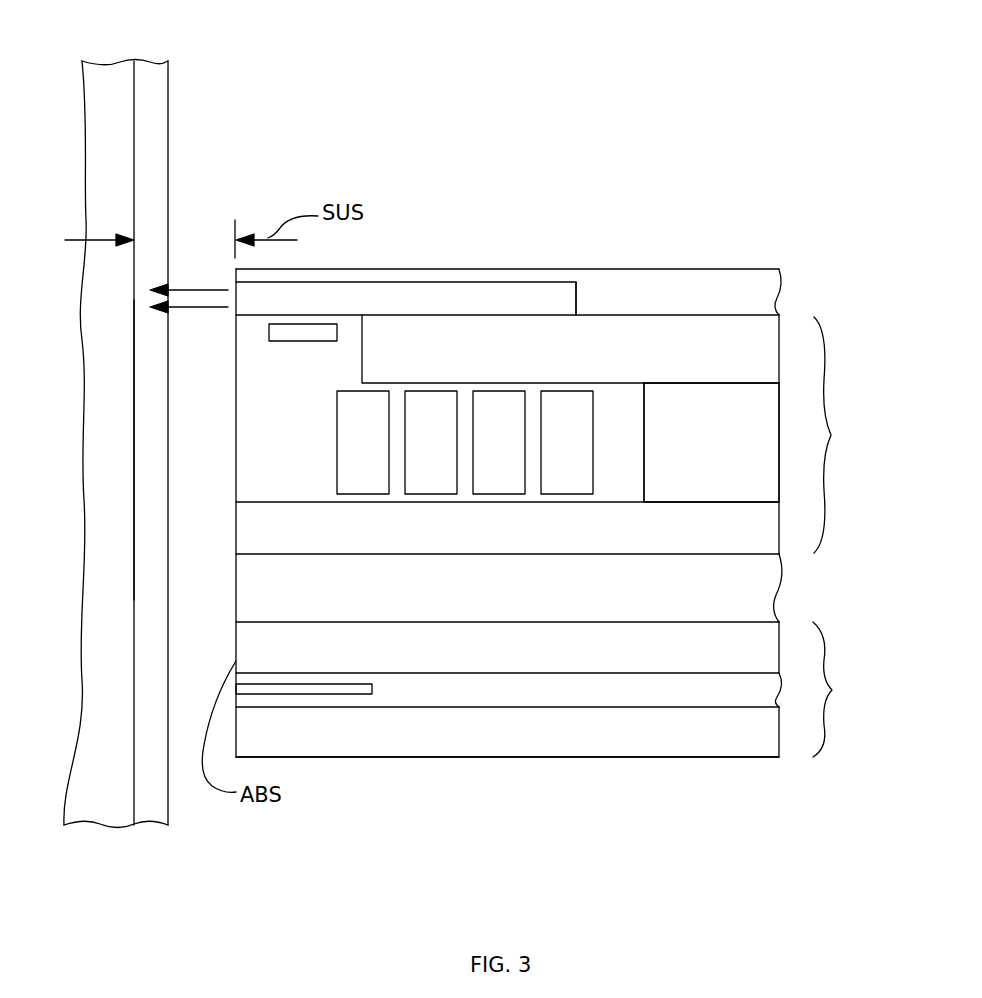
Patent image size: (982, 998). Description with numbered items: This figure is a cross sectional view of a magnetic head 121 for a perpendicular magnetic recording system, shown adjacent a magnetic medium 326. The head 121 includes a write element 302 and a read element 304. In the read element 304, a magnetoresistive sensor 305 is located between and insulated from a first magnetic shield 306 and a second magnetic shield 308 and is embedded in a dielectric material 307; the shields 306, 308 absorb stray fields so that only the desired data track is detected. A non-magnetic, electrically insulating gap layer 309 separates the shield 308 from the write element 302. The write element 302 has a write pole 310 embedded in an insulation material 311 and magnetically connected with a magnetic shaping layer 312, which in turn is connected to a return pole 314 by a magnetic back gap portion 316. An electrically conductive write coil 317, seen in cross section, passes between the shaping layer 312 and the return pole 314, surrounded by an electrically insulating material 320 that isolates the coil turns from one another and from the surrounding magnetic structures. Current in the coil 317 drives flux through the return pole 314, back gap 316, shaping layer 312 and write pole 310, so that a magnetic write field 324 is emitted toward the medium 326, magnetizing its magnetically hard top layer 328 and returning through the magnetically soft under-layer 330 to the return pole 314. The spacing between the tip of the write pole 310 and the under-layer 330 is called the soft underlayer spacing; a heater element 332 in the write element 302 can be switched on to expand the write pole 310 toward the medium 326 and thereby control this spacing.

The magnetic head 121 is at (543, 261).
The write element 302 is at (826, 348).
The read element 304 is at (825, 630).
The magnetoresistive sensor 305 is at (372, 690).
The first magnetic shield 306 is at (447, 732).
The dielectric material 307 is at (668, 690).
The second magnetic shield 308 is at (447, 650).
The gap layer 309 is at (465, 588).
The write pole 310 is at (318, 300).
The insulation material 311 is at (673, 297).
The magnetic shaping layer 312 is at (457, 350).
The return pole 314 is at (453, 530).
The magnetic back gap portion 316 is at (677, 447).
The write coil 317 is at (465, 442).
The electrically insulating material 320 is at (312, 447).
The magnetic write field 324 is at (214, 308).
The magnetic medium 326 is at (134, 56).
The magnetically hard top layer 328 is at (155, 125).
The magnetically soft under-layer 330 is at (107, 97).
The heater element 332 is at (305, 343).